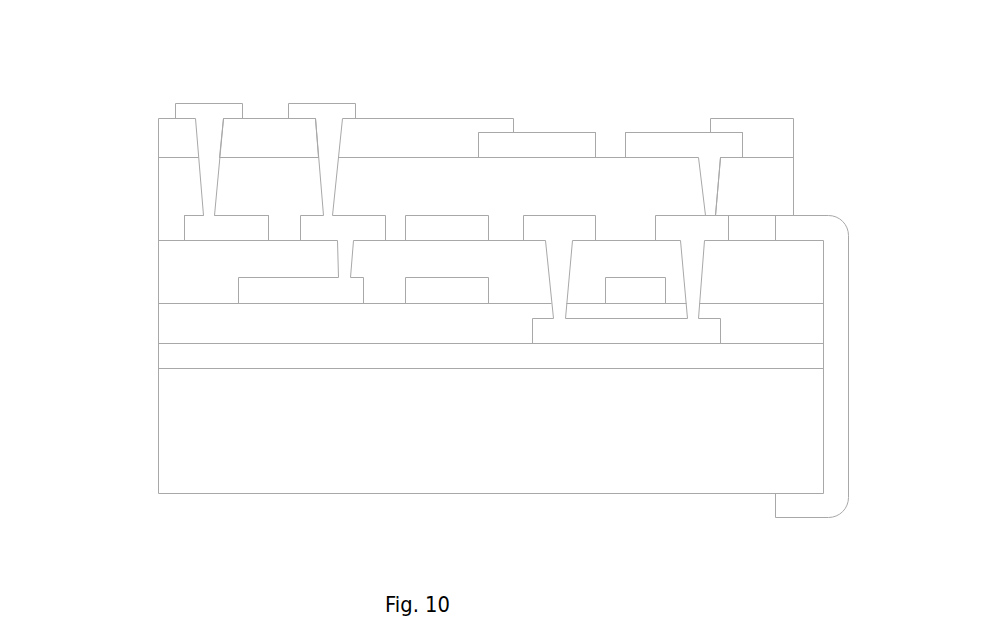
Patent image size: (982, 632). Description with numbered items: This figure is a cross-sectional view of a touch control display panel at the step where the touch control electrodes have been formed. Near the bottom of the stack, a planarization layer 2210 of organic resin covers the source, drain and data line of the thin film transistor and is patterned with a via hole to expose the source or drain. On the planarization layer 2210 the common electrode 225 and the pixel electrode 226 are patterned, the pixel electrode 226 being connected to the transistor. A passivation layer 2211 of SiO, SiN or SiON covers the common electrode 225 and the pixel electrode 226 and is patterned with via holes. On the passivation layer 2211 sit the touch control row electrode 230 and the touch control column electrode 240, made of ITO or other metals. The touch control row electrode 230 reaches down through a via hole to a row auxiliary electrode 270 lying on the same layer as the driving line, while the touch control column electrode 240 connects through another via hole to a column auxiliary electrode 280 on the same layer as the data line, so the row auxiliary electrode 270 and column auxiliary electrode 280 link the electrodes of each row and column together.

The common electrode 225 is at (570, 145).
The pixel electrode 226 is at (700, 142).
The planarization layer 2210 is at (735, 172).
The passivation layer 2211 is at (273, 143).
The touch control row electrode 230 is at (327, 107).
The touch control column electrode 240 is at (205, 111).
The row auxiliary electrode 270 is at (320, 230).
The column auxiliary electrode 280 is at (212, 227).